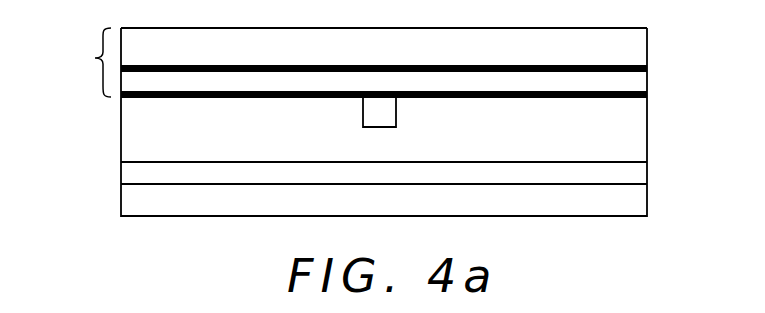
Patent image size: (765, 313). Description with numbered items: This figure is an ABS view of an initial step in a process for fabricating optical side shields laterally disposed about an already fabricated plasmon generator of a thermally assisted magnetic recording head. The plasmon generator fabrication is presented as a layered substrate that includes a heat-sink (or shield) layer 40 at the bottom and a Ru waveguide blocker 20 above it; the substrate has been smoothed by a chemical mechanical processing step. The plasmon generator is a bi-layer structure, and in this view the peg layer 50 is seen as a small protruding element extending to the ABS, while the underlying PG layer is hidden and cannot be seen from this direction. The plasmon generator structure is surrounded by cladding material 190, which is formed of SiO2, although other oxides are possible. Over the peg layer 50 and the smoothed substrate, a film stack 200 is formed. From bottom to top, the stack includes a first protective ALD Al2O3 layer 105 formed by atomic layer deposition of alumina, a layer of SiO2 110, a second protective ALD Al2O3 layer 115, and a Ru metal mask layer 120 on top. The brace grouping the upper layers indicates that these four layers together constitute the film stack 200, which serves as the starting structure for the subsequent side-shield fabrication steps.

The film stack 200 is at (80, 62).
The Ru metal mask layer 120 is at (637, 37).
The second protective ALD Al2O3 layer 115 is at (627, 66).
The SiO2 layer 110 is at (633, 75).
The first protective ALD Al2O3 layer 105 is at (625, 95).
The cladding material 190 is at (637, 131).
The peg layer 50 is at (373, 111).
The Ru waveguide blocker 20 is at (637, 167).
The heat-sink layer 40 is at (637, 198).